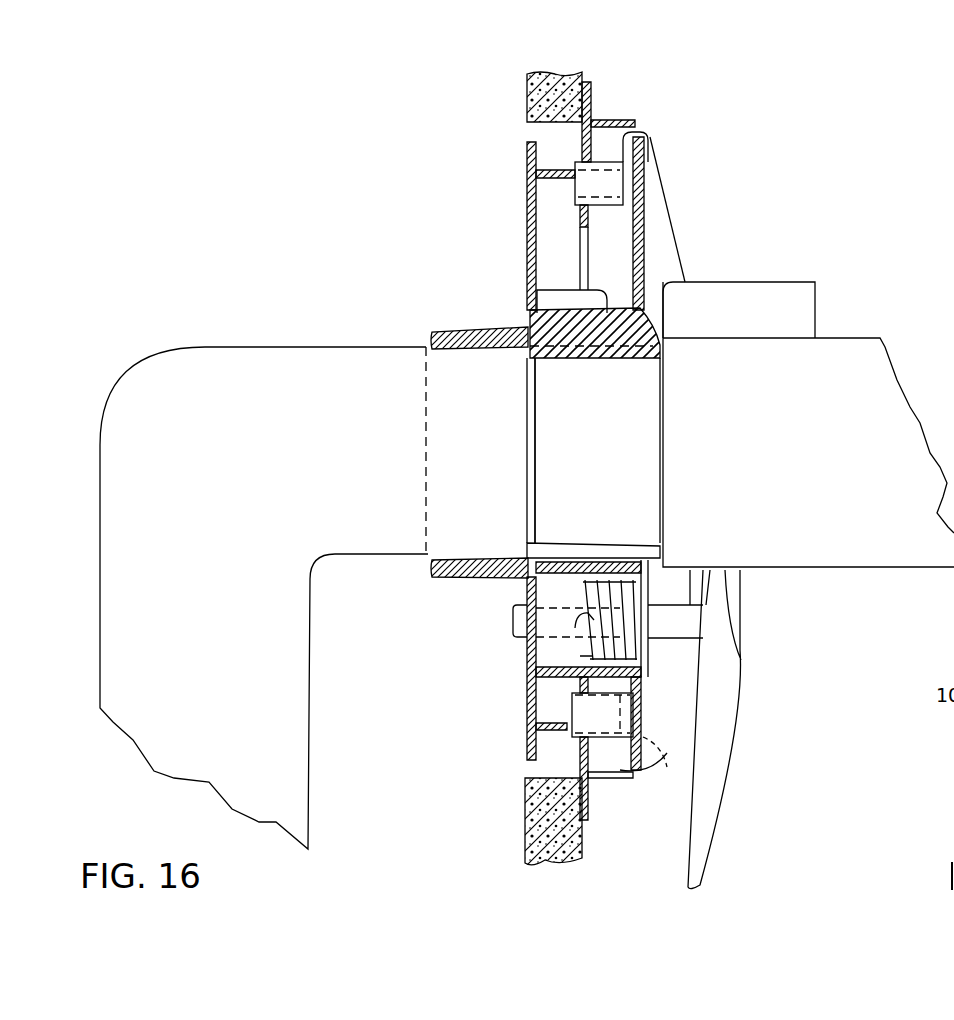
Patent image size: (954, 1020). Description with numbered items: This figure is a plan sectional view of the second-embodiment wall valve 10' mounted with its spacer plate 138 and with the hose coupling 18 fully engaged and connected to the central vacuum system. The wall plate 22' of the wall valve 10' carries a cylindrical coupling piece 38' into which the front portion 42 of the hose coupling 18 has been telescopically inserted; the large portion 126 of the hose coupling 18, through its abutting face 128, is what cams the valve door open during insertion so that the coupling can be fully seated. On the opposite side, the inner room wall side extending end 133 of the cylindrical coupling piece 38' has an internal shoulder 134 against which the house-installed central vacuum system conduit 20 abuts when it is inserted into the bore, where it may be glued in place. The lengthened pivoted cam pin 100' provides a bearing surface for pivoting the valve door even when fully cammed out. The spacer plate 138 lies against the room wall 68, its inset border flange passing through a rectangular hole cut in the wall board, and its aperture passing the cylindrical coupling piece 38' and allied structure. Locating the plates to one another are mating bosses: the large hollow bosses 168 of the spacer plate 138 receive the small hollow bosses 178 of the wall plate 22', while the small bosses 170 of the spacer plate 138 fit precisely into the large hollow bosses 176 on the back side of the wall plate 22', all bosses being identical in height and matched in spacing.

The wall valve 10' is at (607, 856).
The hose coupling 18 is at (835, 357).
The central vacuum system conduit 20 is at (285, 728).
The wall plate 22' is at (499, 667).
The cylindrical coupling piece 38' is at (630, 294).
The front portion 42 is at (600, 474).
The room wall 68 is at (527, 827).
The pivoted cam pin 100' is at (531, 623).
The large portion 126 is at (865, 503).
The abutting face 128 is at (663, 320).
The inner room wall side extending end 133 is at (487, 330).
The internal shoulder 134 is at (527, 357).
The spacer plate 138 is at (590, 112).
The large hollow bosses 168 is at (600, 740).
The small bosses 170 is at (600, 160).
The large hollow bosses 176 is at (636, 150).
The small hollow bosses 178 is at (628, 737).